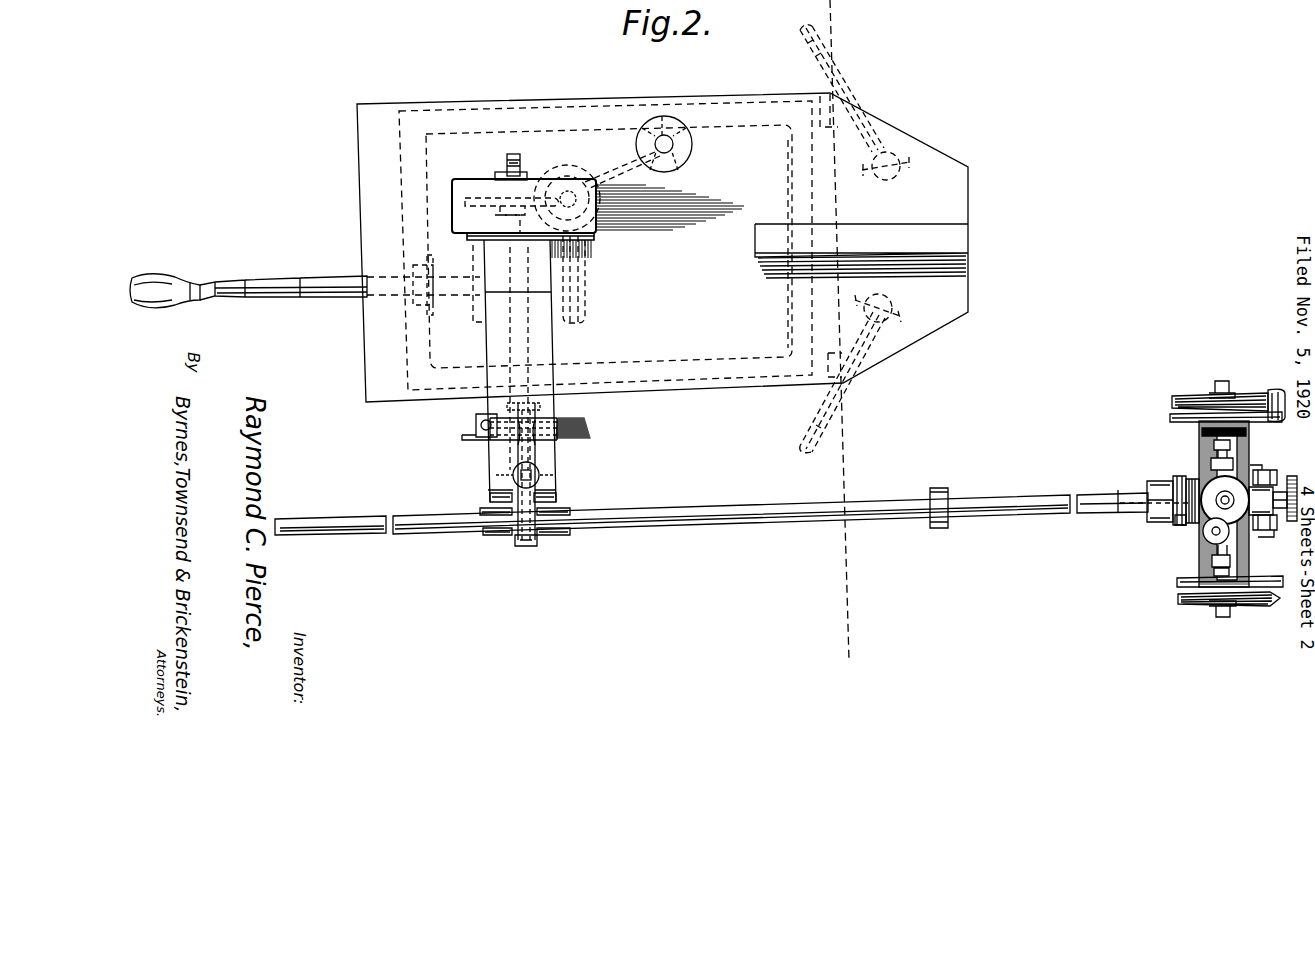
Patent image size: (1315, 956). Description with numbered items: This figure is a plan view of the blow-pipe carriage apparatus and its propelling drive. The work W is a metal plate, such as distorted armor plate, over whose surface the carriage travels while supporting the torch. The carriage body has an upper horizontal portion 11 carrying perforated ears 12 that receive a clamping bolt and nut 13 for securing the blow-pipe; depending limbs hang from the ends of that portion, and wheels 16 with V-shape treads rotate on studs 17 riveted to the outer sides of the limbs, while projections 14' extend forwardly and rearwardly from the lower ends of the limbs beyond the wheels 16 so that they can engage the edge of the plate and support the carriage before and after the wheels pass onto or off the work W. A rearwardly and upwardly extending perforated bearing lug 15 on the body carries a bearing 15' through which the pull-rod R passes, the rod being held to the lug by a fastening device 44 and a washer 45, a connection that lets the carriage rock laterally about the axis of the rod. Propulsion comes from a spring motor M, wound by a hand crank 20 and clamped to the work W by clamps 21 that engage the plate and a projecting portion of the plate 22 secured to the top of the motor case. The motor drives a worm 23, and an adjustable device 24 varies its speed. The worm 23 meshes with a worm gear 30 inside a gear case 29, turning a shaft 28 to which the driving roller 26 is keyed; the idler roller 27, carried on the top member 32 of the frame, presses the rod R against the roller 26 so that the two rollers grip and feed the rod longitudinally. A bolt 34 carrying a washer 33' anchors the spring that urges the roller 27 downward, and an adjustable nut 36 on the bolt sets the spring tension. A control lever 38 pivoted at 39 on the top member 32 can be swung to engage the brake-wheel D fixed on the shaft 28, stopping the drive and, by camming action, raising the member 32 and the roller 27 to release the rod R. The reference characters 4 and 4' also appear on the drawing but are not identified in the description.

The hand wheel 4 is at (1298, 498).
The shaft axis 4' is at (1152, 513).
The horizontal portion 11 is at (1240, 458).
The perforated ears 12 is at (1272, 472).
The clamping bolt and nut 13 is at (1264, 531).
The projections 14' is at (1219, 501).
The bearing lug 15 is at (1174, 484).
The bearing 15' is at (1150, 491).
The wheels 16 is at (1198, 399).
The studs 17 is at (1226, 375).
The hand crank 20 is at (290, 283).
The clamps 21 is at (806, 52).
The plate 22 is at (632, 100).
The worm 23 is at (586, 240).
The adjustable device 24 is at (672, 146).
The driving roller 26 is at (495, 537).
The idler roller 27 is at (548, 537).
The shaft 28 is at (490, 339).
The gear case 29 is at (470, 185).
The worm gear 30 is at (502, 167).
The top member 32 is at (556, 337).
The washer 33' is at (506, 489).
The bolt 34 is at (545, 477).
The adjustable nut 36 is at (512, 473).
The lever 38 is at (538, 455).
The pivot 39 is at (476, 426).
The fastening device 44 is at (1192, 523).
The washer 45 is at (1180, 524).
The brake-wheel D is at (462, 437).
The motor M is at (565, 297).
The pull-rod R is at (730, 520).
The work W is at (845, 589).